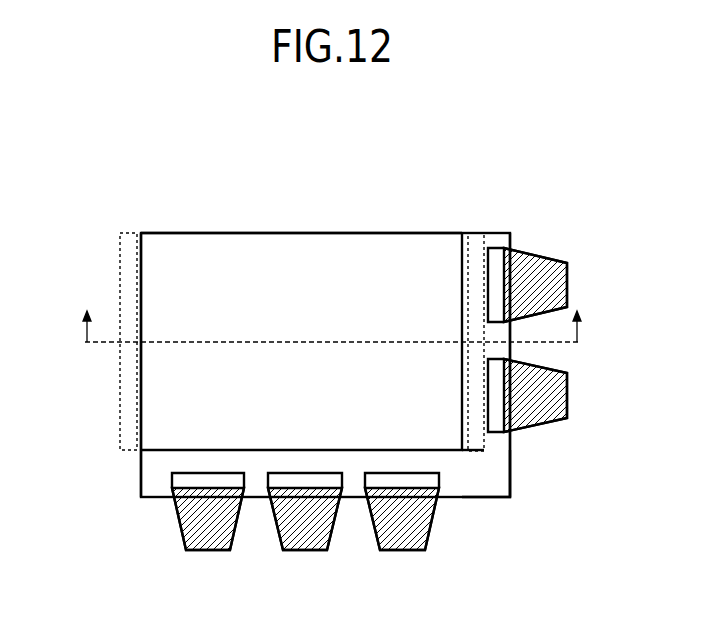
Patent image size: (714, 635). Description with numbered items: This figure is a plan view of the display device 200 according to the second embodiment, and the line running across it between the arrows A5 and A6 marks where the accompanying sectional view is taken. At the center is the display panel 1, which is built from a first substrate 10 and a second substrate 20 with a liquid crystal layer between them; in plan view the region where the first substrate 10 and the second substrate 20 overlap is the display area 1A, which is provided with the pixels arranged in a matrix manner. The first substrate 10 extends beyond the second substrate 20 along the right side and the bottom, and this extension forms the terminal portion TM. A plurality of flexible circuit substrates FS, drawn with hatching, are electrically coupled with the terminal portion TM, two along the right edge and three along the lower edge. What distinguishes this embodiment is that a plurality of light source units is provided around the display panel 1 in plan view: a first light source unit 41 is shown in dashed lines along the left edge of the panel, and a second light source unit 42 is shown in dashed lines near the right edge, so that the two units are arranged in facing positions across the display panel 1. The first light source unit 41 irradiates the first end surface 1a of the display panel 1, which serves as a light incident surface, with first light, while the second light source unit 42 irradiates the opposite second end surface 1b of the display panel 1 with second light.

The display device 200 is at (543, 169).
The display panel 1 is at (253, 233).
The display area 1A is at (312, 248).
The second substrate 20 is at (405, 250).
The first substrate 10 is at (497, 243).
The second light source unit 42 is at (470, 235).
The first light source unit 41 is at (125, 452).
The first end surface 1a is at (141, 257).
The second end surface 1b is at (482, 442).
The terminal portion TM is at (493, 477).
The flexible circuit substrate FS is at (540, 270).
The A5-A6 line A5 is at (315, 326).
The A5-A6 line A6 is at (592, 326).